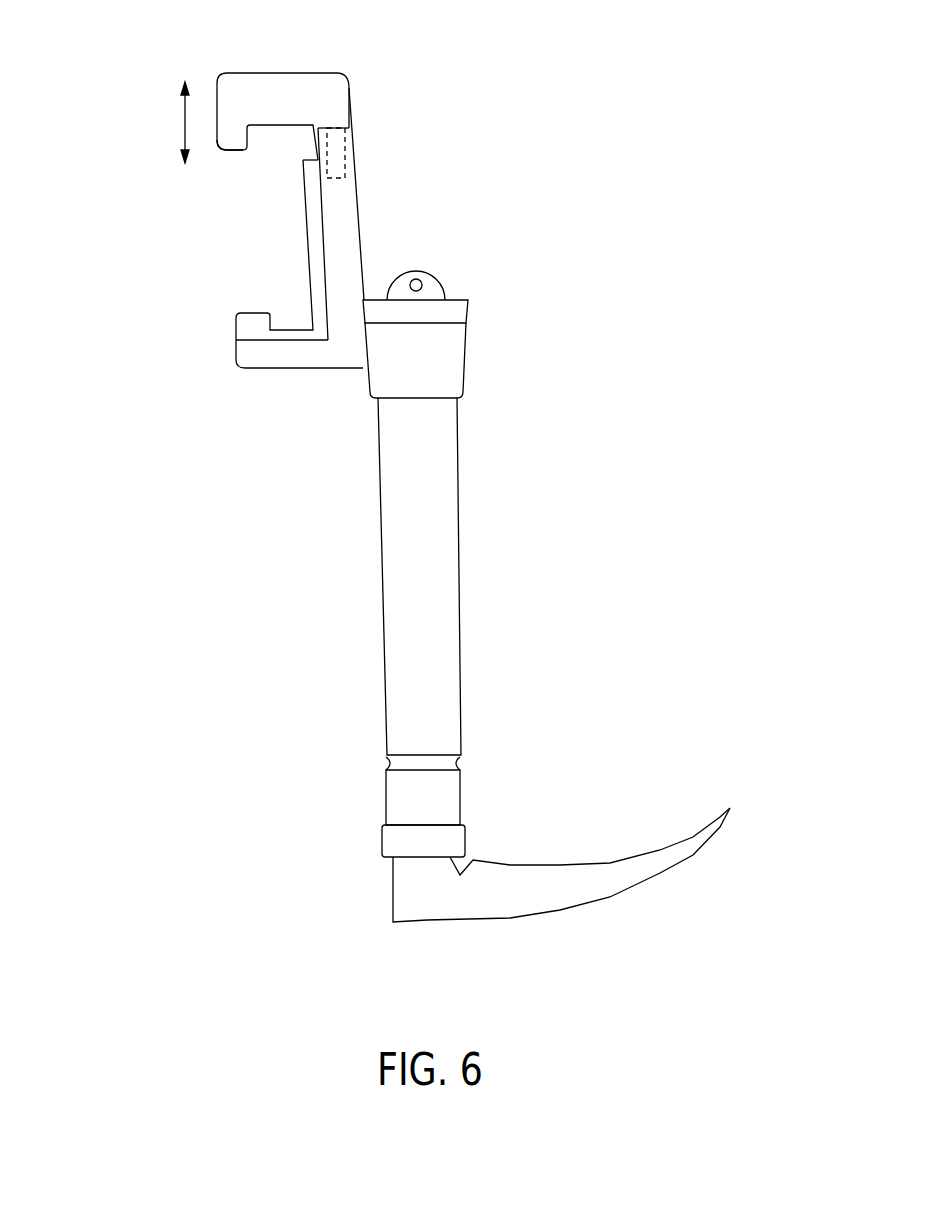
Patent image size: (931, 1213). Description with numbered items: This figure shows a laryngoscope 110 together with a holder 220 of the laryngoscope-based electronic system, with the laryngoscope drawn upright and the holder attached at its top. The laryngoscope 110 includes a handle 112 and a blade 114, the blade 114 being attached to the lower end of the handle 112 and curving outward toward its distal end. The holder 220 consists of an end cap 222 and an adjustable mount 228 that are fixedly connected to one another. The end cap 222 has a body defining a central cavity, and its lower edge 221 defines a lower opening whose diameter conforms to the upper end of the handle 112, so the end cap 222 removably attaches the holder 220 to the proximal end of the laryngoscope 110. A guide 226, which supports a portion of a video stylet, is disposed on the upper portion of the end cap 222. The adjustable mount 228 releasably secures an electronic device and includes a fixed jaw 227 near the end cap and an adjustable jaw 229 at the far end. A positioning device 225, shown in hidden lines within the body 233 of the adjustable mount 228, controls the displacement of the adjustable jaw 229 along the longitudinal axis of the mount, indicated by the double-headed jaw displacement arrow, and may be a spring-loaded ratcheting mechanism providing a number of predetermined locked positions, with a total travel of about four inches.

The laryngoscope 110 is at (330, 630).
The handle 112 is at (447, 557).
The blade 114 is at (588, 897).
The holder 220 is at (440, 180).
The lower edge 221 is at (437, 390).
The end cap 222 is at (468, 302).
The positioning device 225 is at (348, 150).
The guide 226 is at (437, 275).
The fixed jaw 227 is at (240, 367).
The adjustable mount 228 is at (340, 76).
The adjustable jaw 229 is at (223, 152).
The body 233 is at (335, 230).